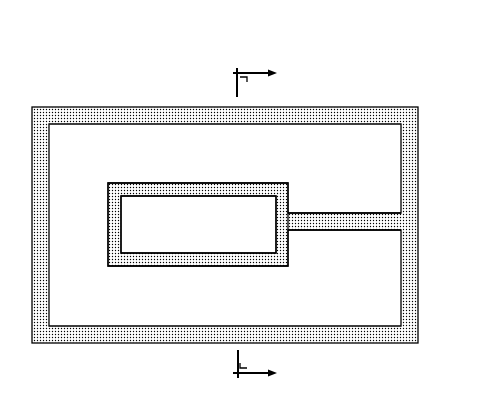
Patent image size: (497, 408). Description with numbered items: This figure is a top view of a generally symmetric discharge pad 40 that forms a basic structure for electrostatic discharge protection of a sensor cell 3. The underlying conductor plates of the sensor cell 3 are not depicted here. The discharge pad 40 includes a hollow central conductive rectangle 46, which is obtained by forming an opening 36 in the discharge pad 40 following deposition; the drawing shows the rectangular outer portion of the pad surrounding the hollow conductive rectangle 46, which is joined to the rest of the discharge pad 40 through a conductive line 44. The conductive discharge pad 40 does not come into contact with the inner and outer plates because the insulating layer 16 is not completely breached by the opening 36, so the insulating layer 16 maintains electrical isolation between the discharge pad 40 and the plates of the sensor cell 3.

The sensor cell 3 is at (359, 59).
The insulating layer 16 is at (387, 333).
The discharge pad 40 is at (68, 107).
The conductive line 44 is at (393, 222).
The hollow conductive rectangle 46 is at (165, 267).
The opening 36 is at (186, 239).